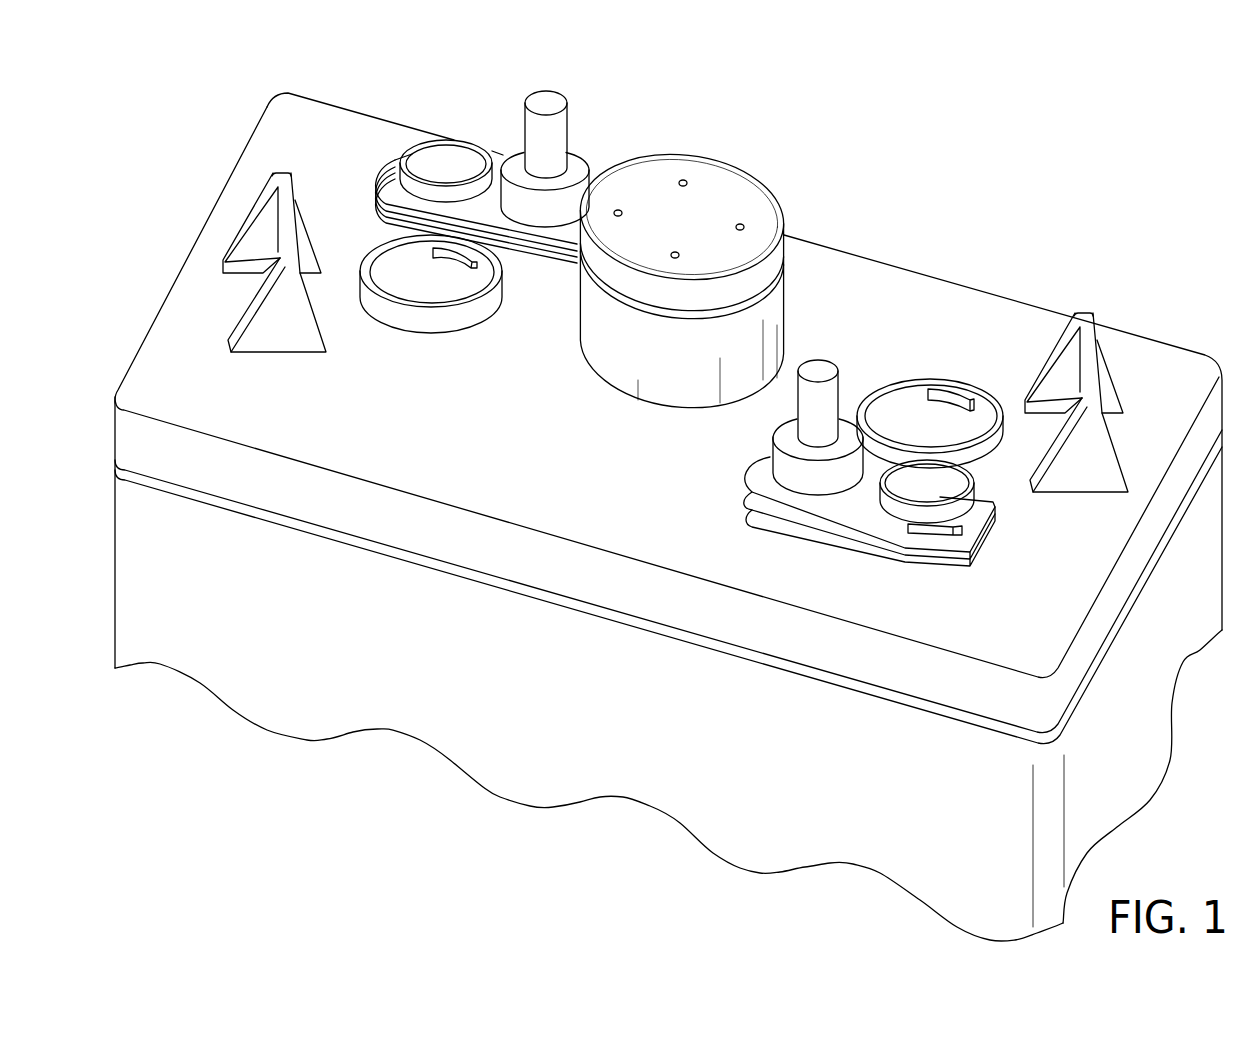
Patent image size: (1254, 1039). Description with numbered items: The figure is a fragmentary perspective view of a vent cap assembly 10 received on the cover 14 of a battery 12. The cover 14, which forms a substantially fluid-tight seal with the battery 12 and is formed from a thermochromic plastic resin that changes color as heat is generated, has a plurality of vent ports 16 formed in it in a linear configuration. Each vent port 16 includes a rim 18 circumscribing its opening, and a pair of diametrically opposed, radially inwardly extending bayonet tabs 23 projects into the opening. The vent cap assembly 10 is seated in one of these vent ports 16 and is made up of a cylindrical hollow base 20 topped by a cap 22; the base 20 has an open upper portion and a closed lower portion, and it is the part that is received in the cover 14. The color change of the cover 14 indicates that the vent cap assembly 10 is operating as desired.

The vent cap assembly 10 is at (695, 272).
The battery 12 is at (297, 118).
The cover 14 is at (377, 155).
The vent port 16 is at (882, 412).
The rim 18 is at (995, 417).
The base 20 is at (674, 368).
The cap 22 is at (674, 314).
The bayonet tab 23 is at (943, 397).